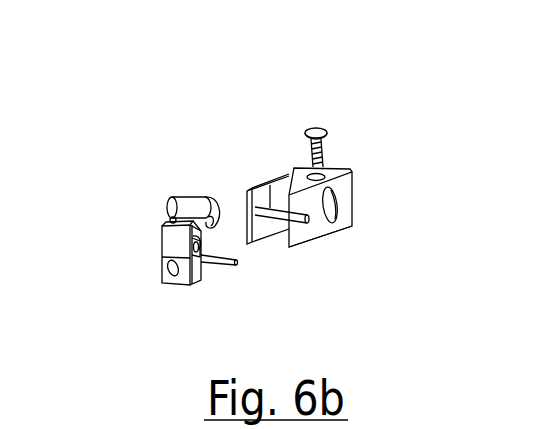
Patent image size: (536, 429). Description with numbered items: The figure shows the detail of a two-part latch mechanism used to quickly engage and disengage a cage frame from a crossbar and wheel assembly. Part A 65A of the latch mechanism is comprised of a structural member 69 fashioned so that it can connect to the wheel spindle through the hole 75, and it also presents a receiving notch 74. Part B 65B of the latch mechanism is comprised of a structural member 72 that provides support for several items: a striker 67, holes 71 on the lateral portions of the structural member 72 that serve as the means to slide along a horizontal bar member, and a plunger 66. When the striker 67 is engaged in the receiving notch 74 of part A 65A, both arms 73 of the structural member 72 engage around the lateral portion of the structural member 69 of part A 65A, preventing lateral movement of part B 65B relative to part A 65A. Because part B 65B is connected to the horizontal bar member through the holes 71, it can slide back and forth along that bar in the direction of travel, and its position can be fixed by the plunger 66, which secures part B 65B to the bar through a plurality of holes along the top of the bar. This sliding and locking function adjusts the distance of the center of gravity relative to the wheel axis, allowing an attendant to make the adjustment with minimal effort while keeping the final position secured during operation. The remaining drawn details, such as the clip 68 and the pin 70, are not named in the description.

The part A of the latch mechanism 65A is at (183, 144).
The part B of the latch mechanism 65B is at (290, 106).
The plunger 66 is at (323, 148).
The striker 67 is at (276, 184).
The clip 68 is at (168, 212).
The structural member of part A 69 is at (160, 263).
The pin 70 is at (194, 265).
The holes 71 is at (344, 207).
The structural member 72 is at (347, 227).
The arms 73 is at (257, 243).
The receiving notch 74 is at (162, 257).
The hole 75 is at (168, 270).